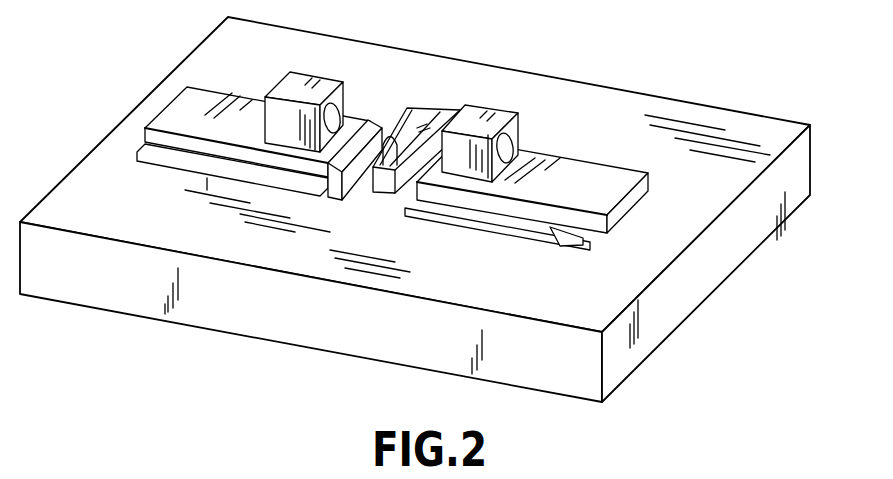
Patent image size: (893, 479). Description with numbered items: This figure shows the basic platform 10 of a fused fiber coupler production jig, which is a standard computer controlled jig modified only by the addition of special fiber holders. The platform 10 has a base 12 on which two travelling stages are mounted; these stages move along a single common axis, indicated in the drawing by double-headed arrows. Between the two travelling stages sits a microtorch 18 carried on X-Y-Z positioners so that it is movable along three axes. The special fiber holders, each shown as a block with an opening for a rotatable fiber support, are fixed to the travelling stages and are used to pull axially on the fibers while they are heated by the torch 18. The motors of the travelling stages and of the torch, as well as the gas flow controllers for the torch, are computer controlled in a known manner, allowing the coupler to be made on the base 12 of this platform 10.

The platform 10 is at (415, 207).
The base 12 is at (333, 343).
The microtorch 18 is at (433, 117).